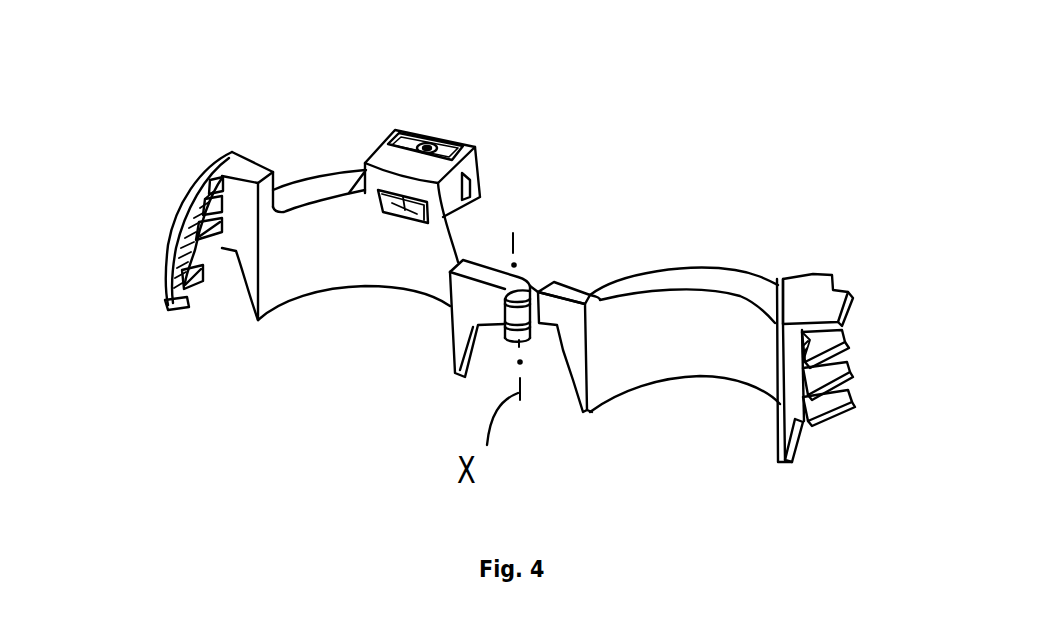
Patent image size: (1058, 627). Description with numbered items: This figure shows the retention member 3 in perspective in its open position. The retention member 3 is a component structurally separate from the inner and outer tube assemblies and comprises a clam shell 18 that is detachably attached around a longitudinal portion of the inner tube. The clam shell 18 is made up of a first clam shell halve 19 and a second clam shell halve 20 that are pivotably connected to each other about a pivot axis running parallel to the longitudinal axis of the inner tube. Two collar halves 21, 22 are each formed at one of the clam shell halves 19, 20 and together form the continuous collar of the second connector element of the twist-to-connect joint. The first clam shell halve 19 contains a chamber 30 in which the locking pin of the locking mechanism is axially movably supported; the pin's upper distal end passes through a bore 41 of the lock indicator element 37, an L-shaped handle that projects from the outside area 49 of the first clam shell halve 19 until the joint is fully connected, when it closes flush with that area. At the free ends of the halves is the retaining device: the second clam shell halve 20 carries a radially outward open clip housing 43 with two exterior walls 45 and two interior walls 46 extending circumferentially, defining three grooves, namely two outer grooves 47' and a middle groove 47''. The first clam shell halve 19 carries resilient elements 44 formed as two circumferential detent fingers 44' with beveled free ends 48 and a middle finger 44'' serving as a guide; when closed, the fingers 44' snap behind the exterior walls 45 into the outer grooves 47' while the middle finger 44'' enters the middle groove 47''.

The retention member 3 is at (612, 193).
The clam shell 18 is at (495, 235).
The first clam shell halve 19 is at (298, 293).
The second clam shell halve 20 is at (650, 380).
The collar halve 21 is at (318, 290).
The collar halve 22 is at (790, 460).
The chamber 30 is at (402, 215).
The lock indicator element 37 is at (393, 142).
The bore 41 is at (426, 142).
The clip housing 43 is at (862, 325).
The resilient elements 44 is at (155, 260).
The resilient fingers 44' is at (198, 233).
The middle finger 44'' is at (150, 222).
The exterior walls 45 is at (834, 305).
The interior walls 46 is at (802, 334).
The outer groove 47' is at (862, 328).
The middle groove 47'' is at (766, 427).
The beveled free ends 48 is at (175, 217).
The outside area 49 is at (387, 153).